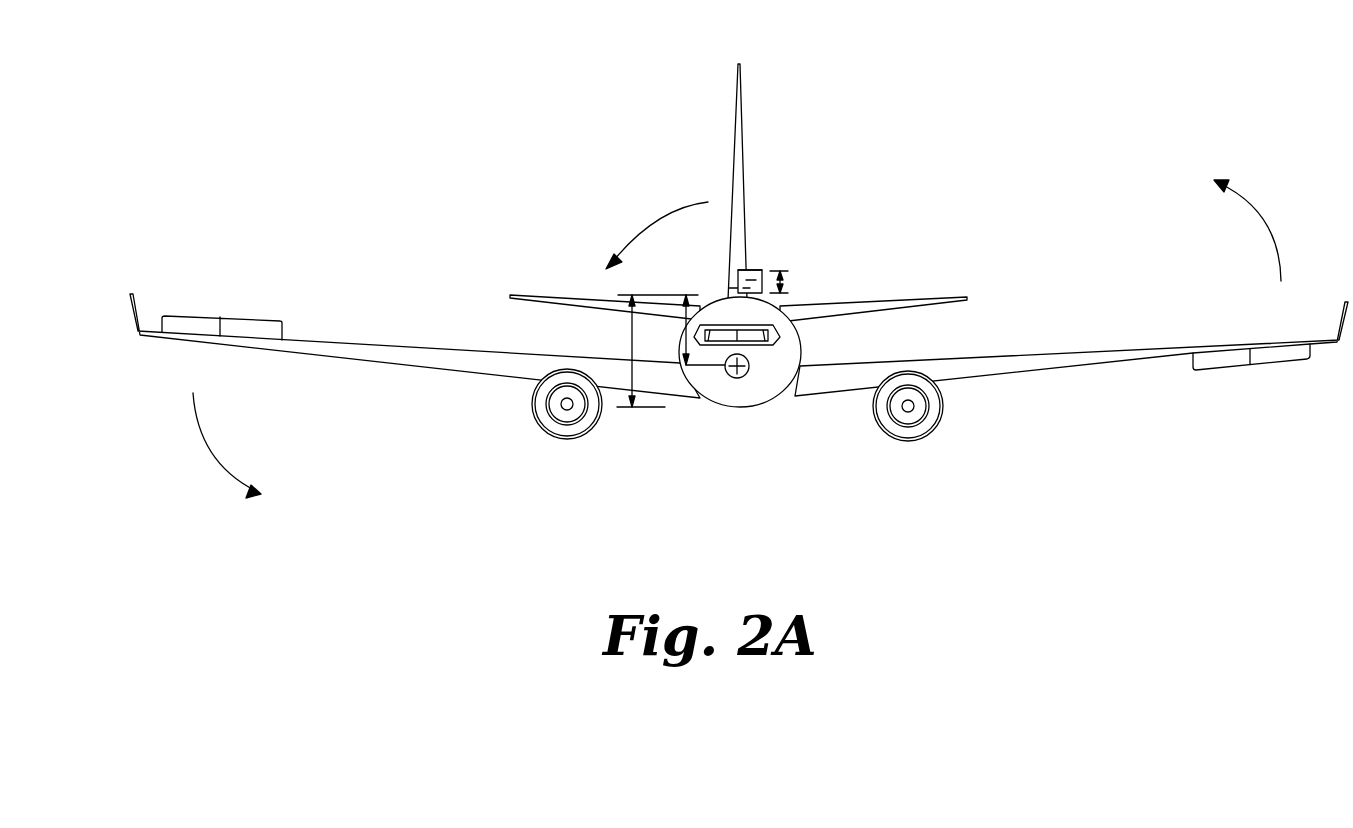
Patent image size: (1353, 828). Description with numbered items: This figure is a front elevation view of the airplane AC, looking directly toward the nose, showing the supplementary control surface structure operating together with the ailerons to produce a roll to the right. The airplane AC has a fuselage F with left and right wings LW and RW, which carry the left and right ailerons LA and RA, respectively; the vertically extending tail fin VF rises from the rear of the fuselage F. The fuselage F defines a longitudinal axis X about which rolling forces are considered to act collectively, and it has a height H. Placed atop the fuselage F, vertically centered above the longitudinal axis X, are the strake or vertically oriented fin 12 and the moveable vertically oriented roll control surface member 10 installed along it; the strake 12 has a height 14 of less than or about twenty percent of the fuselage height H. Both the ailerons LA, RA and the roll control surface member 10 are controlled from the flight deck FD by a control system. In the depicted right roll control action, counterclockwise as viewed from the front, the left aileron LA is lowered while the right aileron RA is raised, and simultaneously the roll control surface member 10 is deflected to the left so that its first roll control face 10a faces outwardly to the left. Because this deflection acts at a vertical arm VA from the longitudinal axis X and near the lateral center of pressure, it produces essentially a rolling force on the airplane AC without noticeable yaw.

The airplane AC is at (739, 273).
The fuselage F is at (703, 400).
The vertically extending tail fin VF is at (733, 168).
The right wing RW is at (388, 362).
The left wing LW is at (1090, 363).
The right aileron RA is at (237, 318).
The left aileron LA is at (1261, 363).
The flight deck FD is at (785, 336).
The longitudinal axis X is at (747, 378).
The height H is at (630, 342).
The vertical arm VA is at (683, 332).
The moveable vertically oriented roll control surface member 10 is at (761, 268).
The first roll control face 10a is at (740, 270).
The strake or vertically oriented fin 12 is at (730, 290).
The height 14 is at (782, 281).